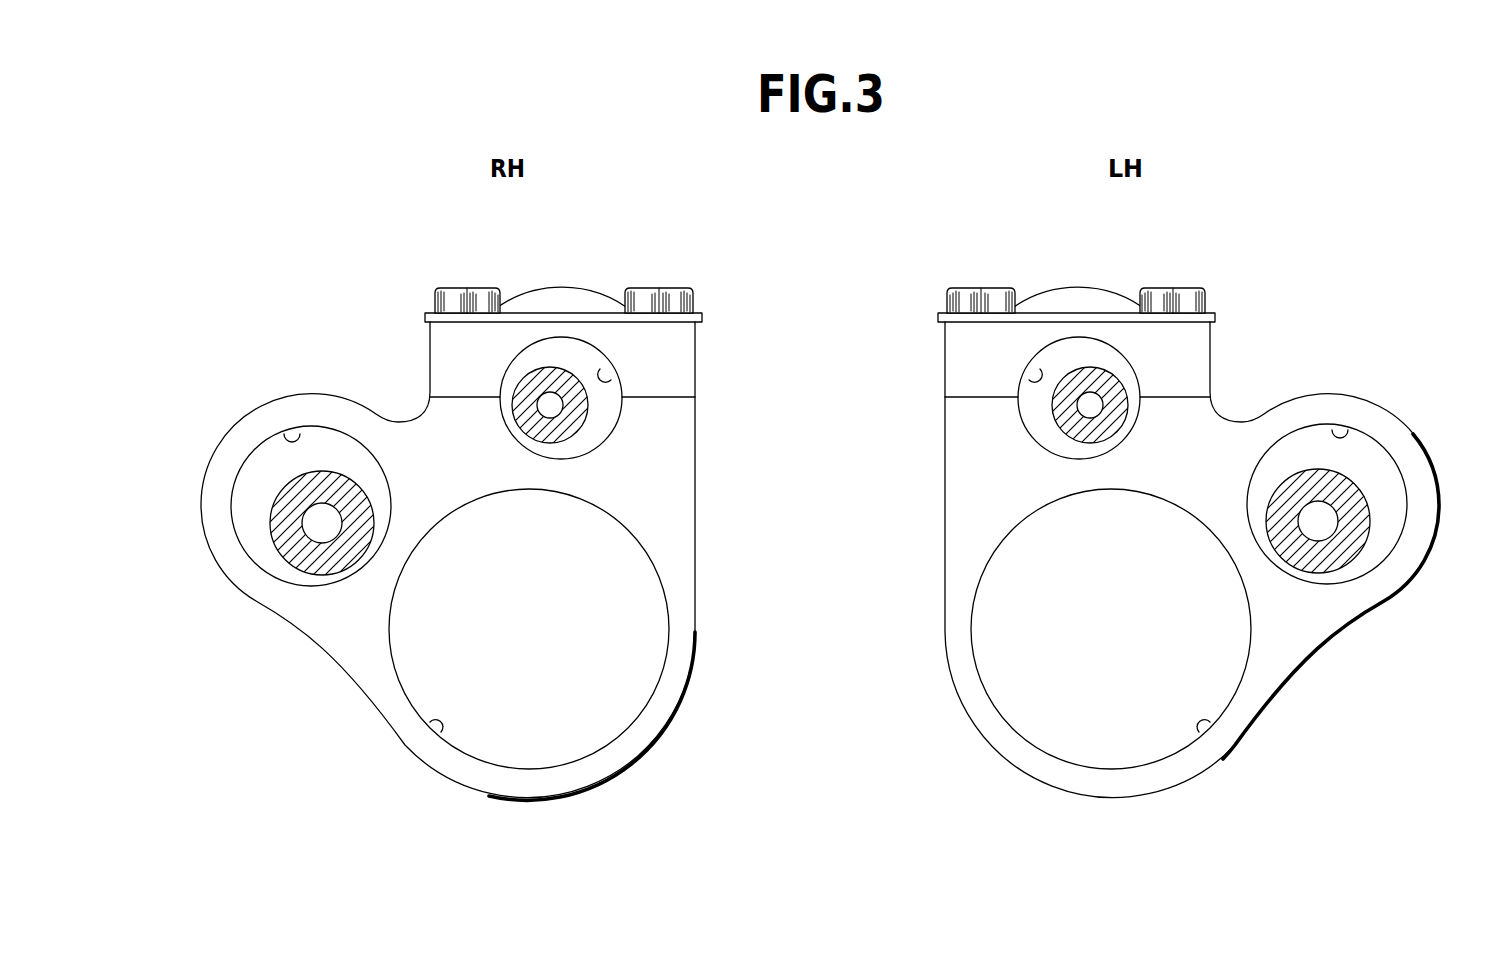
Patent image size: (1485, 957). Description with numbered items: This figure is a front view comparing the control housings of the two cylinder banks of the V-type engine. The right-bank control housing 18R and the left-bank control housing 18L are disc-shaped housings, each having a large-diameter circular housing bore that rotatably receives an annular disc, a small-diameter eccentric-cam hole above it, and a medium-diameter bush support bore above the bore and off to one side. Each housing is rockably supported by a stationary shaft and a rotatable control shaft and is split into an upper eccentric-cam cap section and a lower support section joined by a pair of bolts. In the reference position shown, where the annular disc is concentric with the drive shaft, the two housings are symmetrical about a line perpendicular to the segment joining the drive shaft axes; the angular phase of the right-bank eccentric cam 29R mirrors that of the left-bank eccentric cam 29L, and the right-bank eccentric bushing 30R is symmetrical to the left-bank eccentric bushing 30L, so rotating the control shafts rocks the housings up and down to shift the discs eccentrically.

The right-bank control housing 18R is at (642, 737).
The left-bank control housing 18L is at (993, 725).
The right-bank eccentric cam 29R is at (552, 348).
The left-bank eccentric cam 29L is at (1075, 343).
The right-bank eccentric bushing 30R is at (263, 473).
The left-bank eccentric bushing 30L is at (1382, 468).